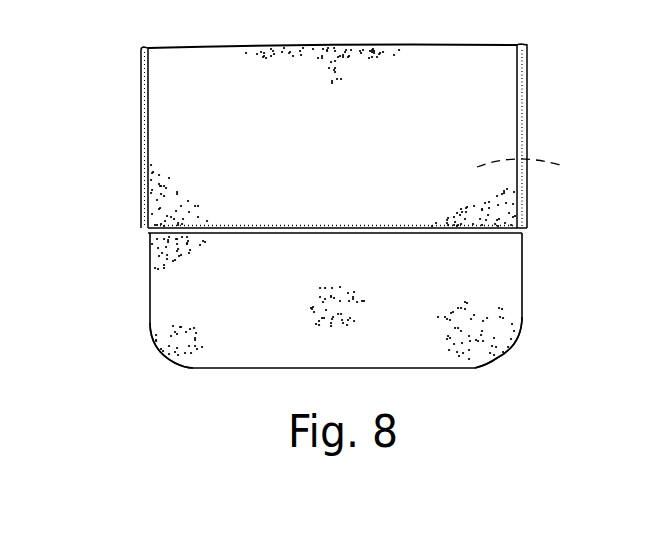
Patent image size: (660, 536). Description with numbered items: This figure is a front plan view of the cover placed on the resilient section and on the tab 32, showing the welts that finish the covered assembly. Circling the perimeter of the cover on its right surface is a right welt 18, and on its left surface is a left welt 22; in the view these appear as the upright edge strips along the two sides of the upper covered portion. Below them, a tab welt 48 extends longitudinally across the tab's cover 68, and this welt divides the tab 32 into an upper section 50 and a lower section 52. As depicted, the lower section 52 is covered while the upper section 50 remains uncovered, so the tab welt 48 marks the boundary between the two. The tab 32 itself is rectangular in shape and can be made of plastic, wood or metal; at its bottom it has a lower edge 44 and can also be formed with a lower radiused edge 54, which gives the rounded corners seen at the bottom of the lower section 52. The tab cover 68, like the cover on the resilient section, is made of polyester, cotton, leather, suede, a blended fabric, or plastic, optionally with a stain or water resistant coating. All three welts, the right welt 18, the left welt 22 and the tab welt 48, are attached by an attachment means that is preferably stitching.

The right welt 18 is at (527, 105).
The left welt 22 is at (141, 112).
The upper section 50 is at (534, 170).
The tab welt 48 is at (522, 230).
The lower section 52 is at (176, 298).
The lower radiused edge 54 is at (512, 343).
The tab 32 is at (132, 366).
The lower edge 44 is at (205, 370).
The tab cover 68 is at (448, 330).